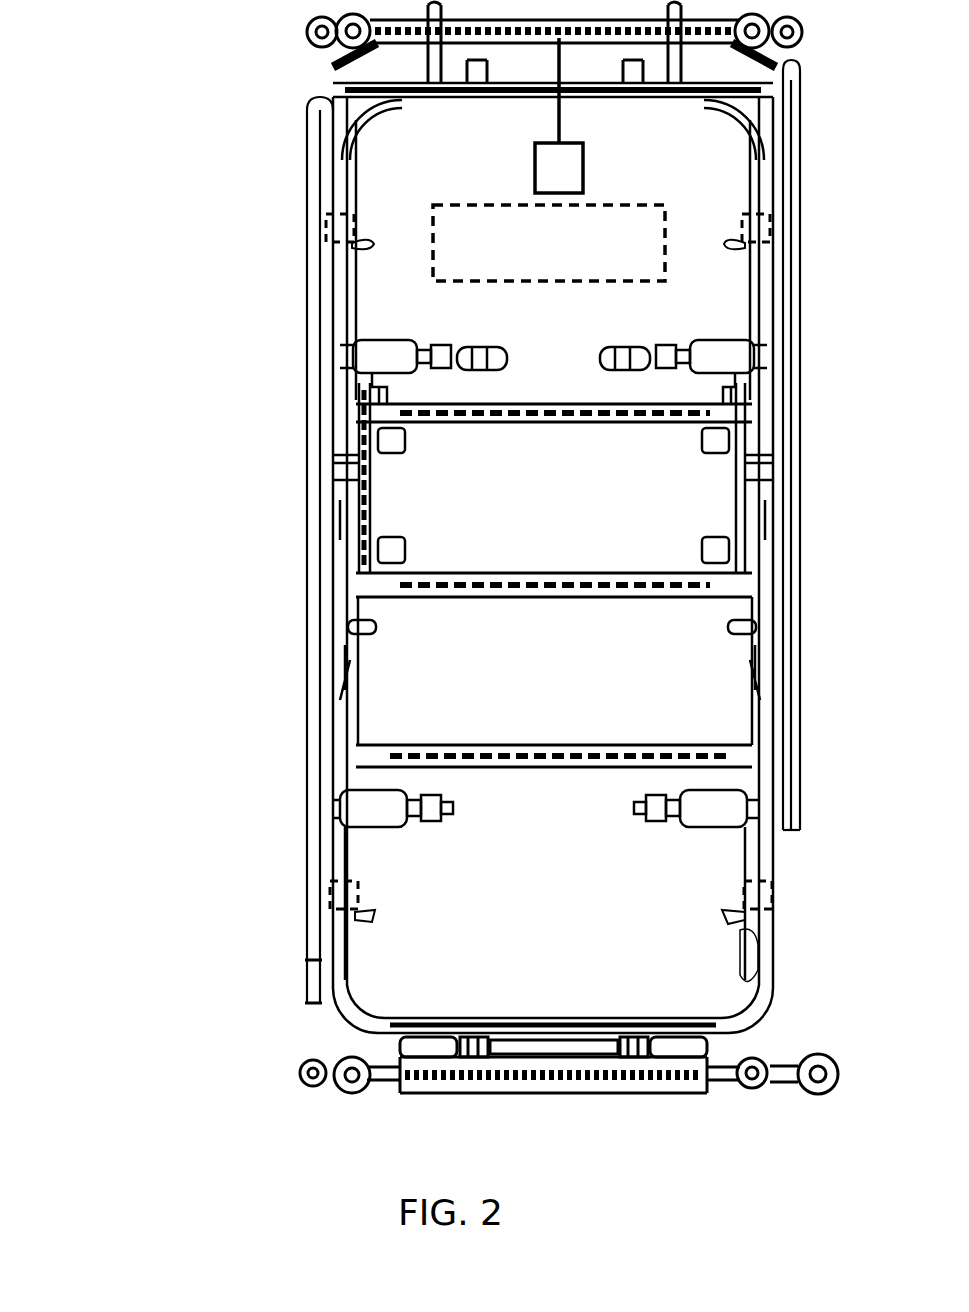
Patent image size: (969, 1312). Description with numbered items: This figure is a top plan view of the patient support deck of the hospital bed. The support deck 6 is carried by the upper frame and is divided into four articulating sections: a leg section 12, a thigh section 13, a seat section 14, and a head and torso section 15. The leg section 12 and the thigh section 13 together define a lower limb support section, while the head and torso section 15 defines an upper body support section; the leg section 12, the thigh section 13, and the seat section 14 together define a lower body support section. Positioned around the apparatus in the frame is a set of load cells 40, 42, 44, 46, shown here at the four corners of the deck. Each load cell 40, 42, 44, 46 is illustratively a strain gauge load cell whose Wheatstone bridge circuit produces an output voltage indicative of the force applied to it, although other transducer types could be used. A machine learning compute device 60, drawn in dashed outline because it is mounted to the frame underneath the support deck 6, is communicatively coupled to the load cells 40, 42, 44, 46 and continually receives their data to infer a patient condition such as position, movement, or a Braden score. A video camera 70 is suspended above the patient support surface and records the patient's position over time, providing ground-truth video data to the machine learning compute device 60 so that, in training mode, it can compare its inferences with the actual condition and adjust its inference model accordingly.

The support deck 6 is at (121, 338).
The leg section 12 is at (413, 877).
The thigh section 13 is at (437, 647).
The seat section 14 is at (423, 482).
The head and torso section 15 is at (430, 302).
The load cell 40 is at (325, 228).
The load cell 42 is at (330, 895).
The load cell 44 is at (772, 228).
The load cell 46 is at (772, 895).
The machine learning compute device 60 is at (640, 205).
The video camera 70 is at (583, 165).